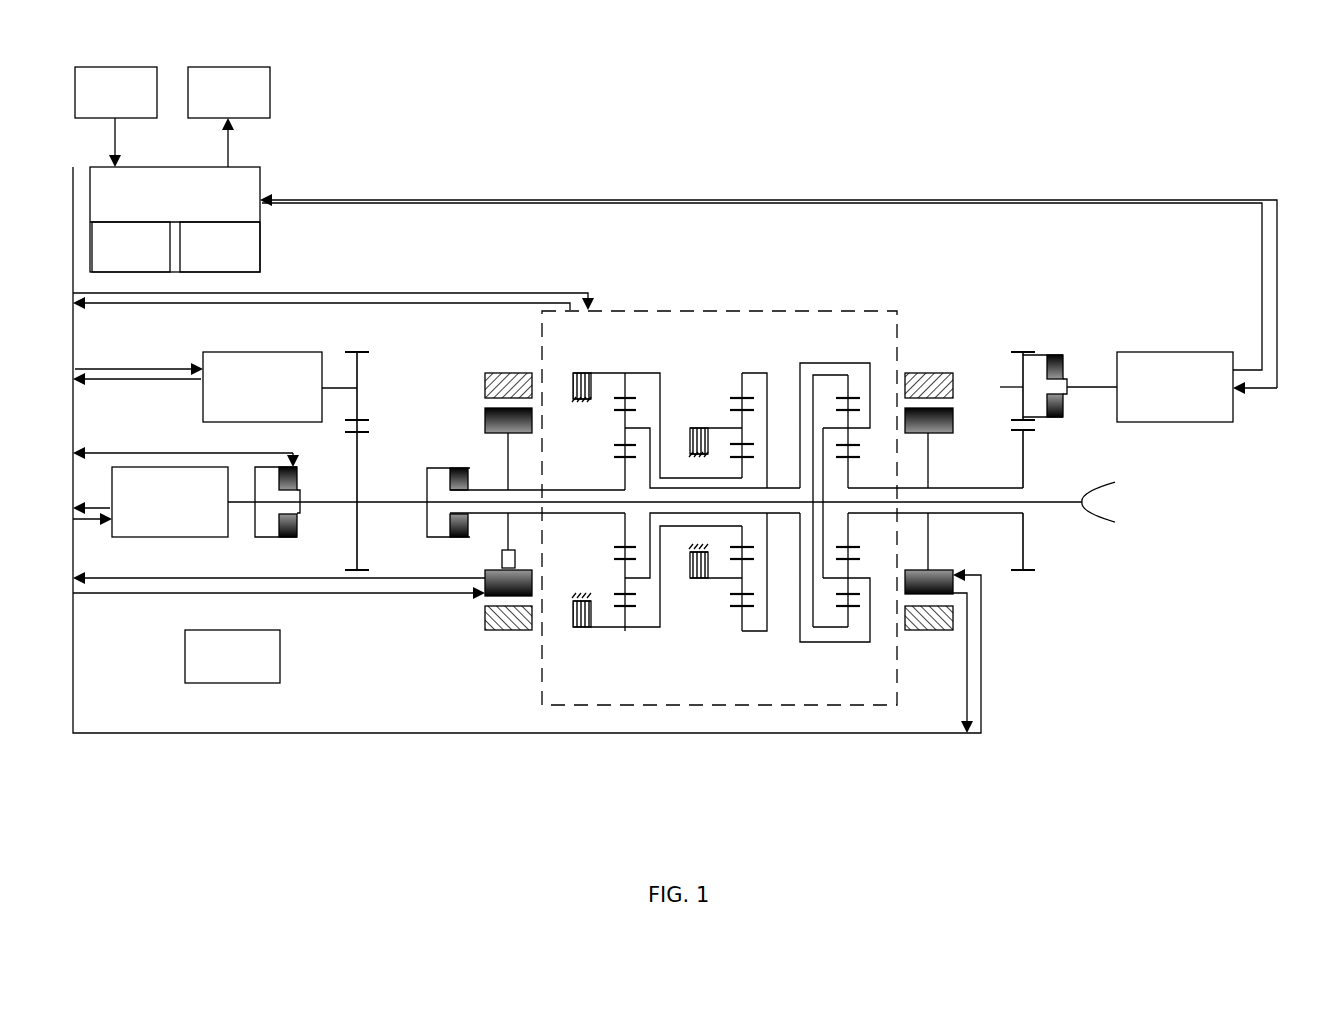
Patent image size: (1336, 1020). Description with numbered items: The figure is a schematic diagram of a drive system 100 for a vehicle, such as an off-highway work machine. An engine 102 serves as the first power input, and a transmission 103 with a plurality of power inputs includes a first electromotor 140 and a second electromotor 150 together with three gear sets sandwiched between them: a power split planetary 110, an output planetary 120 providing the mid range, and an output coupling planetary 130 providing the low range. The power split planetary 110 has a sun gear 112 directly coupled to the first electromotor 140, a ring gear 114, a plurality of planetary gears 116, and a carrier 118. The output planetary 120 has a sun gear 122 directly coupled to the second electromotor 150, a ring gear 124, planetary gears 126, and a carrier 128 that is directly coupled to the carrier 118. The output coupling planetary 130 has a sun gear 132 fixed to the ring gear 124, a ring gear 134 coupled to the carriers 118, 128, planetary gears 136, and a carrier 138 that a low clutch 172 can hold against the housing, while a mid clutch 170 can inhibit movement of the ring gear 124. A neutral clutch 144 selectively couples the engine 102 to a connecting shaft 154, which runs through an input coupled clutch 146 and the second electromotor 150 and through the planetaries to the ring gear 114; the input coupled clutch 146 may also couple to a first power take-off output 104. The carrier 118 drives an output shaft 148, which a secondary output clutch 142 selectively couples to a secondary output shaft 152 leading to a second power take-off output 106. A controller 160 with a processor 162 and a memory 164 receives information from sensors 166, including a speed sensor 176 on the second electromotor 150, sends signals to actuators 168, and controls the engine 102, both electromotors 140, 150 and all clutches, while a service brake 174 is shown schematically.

The drive system 100 is at (1268, 78).
The engine 102 is at (138, 537).
The transmission 103 is at (660, 311).
The first power take-off output 104 is at (243, 352).
The second power take-off output 106 is at (1188, 352).
The power split planetary 110 is at (884, 518).
The sun gear 112 is at (854, 458).
The ring gear 114 is at (845, 396).
The planetary gears 116 is at (826, 422).
The carrier 118 is at (802, 613).
The output planetary 120 is at (672, 521).
The sun gear 122 is at (622, 459).
The ring gear 124 is at (628, 398).
The planetary gears 126 is at (626, 446).
The carrier 128 is at (648, 572).
The output coupling planetary 130 is at (725, 527).
The sun gear 132 is at (742, 462).
The ring gear 134 is at (740, 398).
The planetary gears 136 is at (740, 412).
The carrier 138 is at (734, 575).
The first electromotor 140 is at (924, 362).
The secondary output clutch 142 is at (1058, 432).
The neutral clutch 144 is at (292, 553).
The input coupled clutch 146 is at (447, 553).
The output shaft 148 is at (1038, 502).
The second electromotor 150 is at (513, 366).
The secondary output shaft 152 is at (1090, 387).
The connecting shaft 154 is at (362, 502).
The controller 160 is at (258, 167).
The processor 162 is at (131, 247).
The memory 164 is at (220, 247).
The sensors 166 is at (116, 116).
The actuators 168 is at (229, 117).
The mid clutch 170 is at (590, 628).
The low clutch 172 is at (700, 578).
The service brake 174 is at (232, 656).
The speed sensor 176 is at (500, 558).